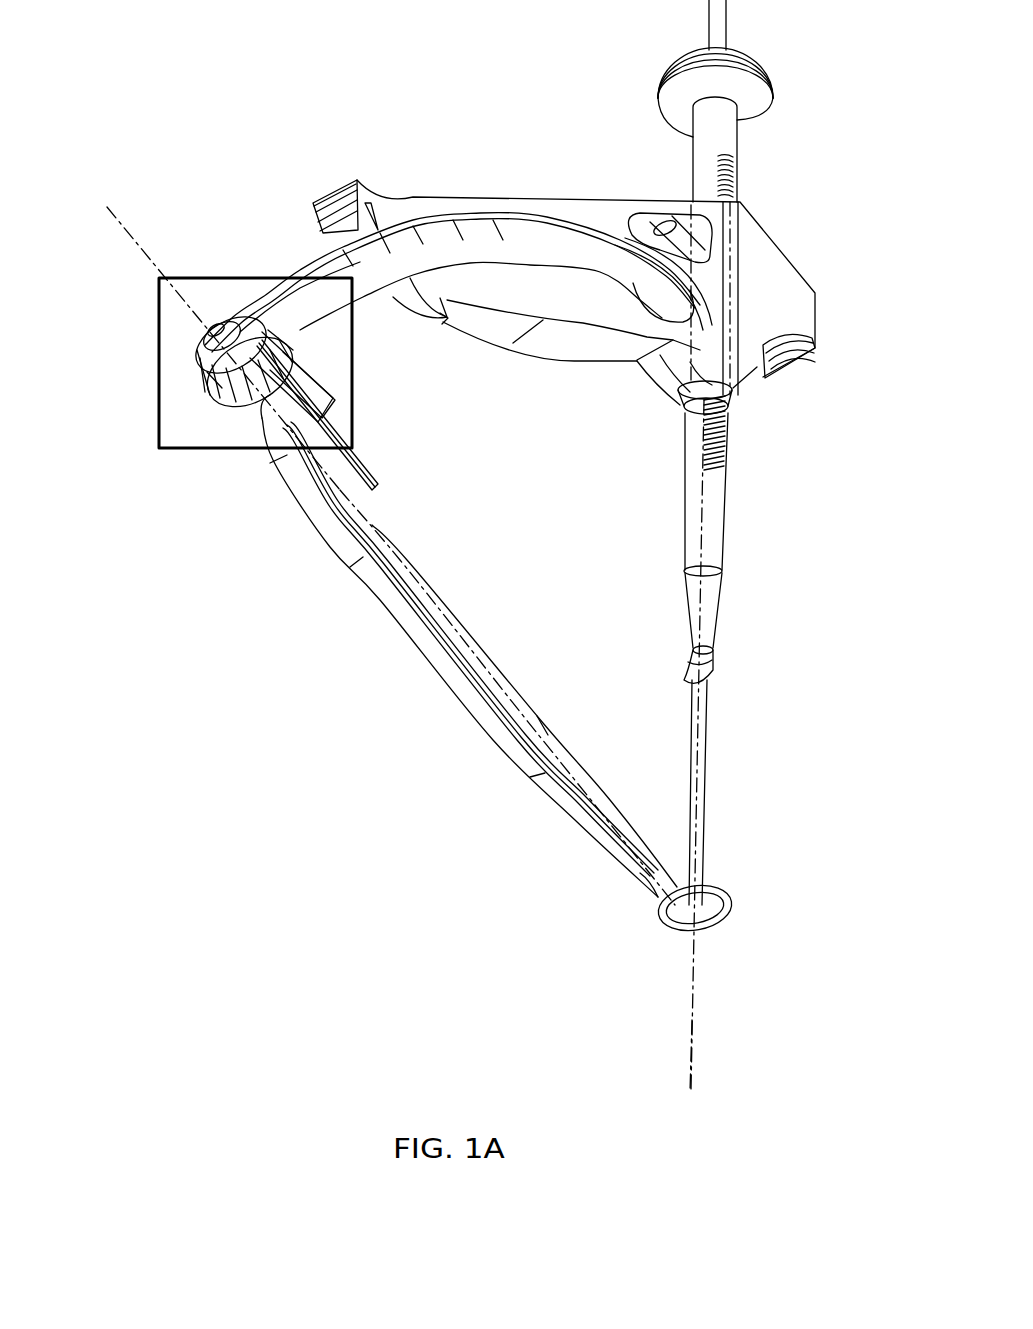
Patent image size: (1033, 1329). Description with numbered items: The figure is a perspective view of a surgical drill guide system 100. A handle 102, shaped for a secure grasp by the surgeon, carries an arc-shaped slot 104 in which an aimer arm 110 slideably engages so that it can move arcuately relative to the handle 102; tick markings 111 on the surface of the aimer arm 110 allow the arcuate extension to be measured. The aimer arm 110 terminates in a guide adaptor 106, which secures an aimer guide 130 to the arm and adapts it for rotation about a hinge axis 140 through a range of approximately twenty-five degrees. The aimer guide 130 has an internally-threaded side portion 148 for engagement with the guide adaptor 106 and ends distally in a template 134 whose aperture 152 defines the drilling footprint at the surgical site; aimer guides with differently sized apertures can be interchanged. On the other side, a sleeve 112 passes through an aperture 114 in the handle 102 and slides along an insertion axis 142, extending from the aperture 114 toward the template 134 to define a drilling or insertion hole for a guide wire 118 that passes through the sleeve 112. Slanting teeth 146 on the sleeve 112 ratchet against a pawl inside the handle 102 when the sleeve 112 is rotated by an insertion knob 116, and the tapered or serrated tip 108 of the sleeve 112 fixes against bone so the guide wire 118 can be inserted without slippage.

The surgical drill guide system 100 is at (120, 133).
The handle 102 is at (549, 212).
The arc-shaped slot 104 is at (650, 262).
The guide adaptor 106 is at (158, 432).
The tip 108 is at (713, 671).
The aimer arm 110 is at (481, 227).
The tick markings 111 is at (394, 240).
The sleeve 112 is at (725, 457).
The aperture 114 is at (710, 332).
The insertion knob 116 is at (752, 70).
The guide wire 118 is at (710, 787).
The aimer guide 130 is at (458, 680).
The template 134 is at (727, 893).
The hinge axis 140 is at (140, 247).
The insertion axis 142 is at (690, 1057).
The slanting teeth 146 is at (740, 158).
The internally-threaded side portion 148 is at (370, 523).
The aperture 152 is at (720, 927).